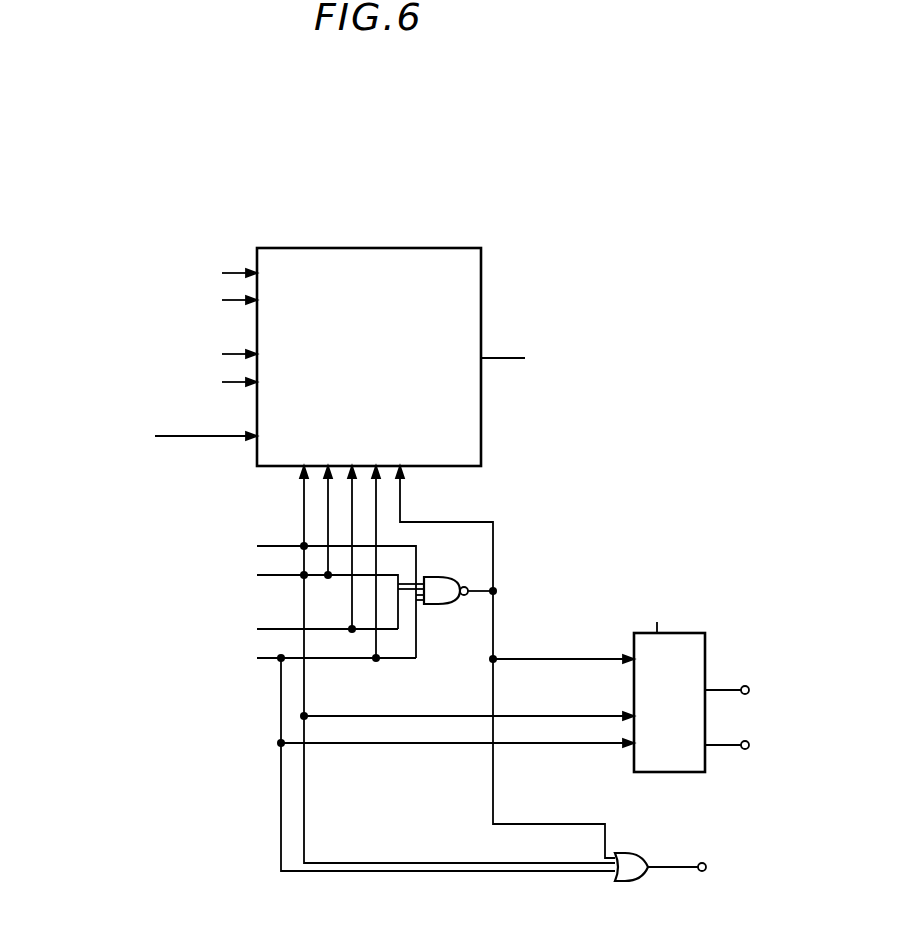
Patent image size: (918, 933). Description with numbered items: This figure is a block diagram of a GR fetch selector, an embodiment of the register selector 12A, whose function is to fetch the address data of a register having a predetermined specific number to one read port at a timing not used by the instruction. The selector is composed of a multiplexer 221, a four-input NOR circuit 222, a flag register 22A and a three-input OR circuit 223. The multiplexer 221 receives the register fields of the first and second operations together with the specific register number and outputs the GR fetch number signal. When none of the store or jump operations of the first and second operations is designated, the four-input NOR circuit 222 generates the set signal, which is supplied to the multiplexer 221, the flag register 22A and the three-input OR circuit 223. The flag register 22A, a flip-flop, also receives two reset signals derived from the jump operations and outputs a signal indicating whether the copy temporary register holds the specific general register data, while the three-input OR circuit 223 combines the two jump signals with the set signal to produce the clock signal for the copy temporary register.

The register selector 12A is at (161, 200).
The multiplexer 221 is at (400, 248).
The four-input NOR circuit 222 is at (445, 604).
The flag register 22A is at (673, 633).
The three-input OR circuit 223 is at (630, 881).